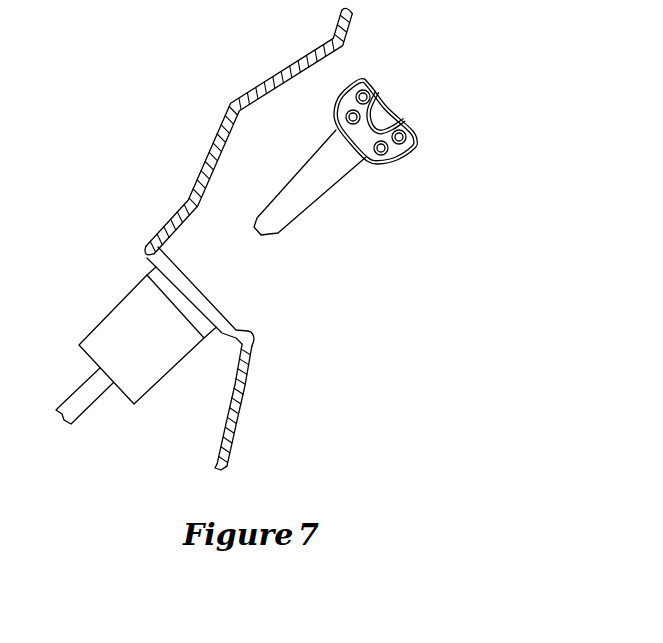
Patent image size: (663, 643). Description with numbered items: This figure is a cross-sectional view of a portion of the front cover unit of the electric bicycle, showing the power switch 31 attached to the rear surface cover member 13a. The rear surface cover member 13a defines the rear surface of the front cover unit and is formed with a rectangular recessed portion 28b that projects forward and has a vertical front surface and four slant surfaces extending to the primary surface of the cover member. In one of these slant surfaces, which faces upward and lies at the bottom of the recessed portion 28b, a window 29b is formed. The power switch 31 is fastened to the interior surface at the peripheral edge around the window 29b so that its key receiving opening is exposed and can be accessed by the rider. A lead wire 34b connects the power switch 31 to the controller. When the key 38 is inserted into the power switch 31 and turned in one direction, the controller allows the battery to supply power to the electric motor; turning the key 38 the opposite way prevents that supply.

The rear surface cover member 13a is at (354, 18).
The recessed portion 28b is at (223, 150).
The window 29b is at (218, 328).
The power switch 31 is at (102, 324).
The lead wire 34b is at (73, 405).
The key 38 is at (318, 188).